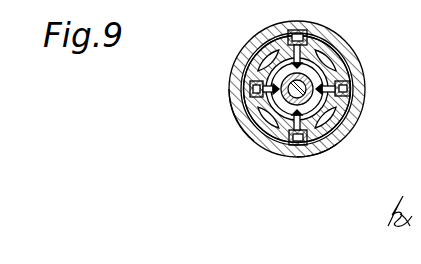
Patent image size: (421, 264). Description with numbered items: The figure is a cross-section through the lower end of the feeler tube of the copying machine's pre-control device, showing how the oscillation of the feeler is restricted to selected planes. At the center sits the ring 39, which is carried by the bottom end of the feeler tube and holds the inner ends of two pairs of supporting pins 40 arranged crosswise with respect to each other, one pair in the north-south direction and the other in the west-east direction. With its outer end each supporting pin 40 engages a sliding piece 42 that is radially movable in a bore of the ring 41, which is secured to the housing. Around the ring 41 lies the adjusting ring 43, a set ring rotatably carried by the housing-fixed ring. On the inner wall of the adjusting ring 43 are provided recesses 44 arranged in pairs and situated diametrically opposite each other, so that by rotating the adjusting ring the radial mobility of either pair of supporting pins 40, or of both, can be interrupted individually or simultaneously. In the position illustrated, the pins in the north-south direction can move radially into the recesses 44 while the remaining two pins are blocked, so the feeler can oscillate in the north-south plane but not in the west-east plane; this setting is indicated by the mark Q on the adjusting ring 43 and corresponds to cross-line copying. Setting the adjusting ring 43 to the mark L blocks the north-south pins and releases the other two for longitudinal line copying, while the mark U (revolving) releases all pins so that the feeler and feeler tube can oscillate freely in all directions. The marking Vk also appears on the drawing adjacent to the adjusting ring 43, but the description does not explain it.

The ring 39 is at (347, 119).
The supporting pins 40 is at (350, 63).
The ring 41 is at (263, 49).
The sliding piece 42 is at (318, 32).
The adjusting ring 43 is at (235, 67).
The recesses 44 is at (250, 125).
The mark U (revolving) U is at (346, 137).
The mark L (longitudinal line copying) L is at (327, 152).
The mark Q (cross-line copying) Q is at (297, 157).
The left pin block Vk is at (267, 155).